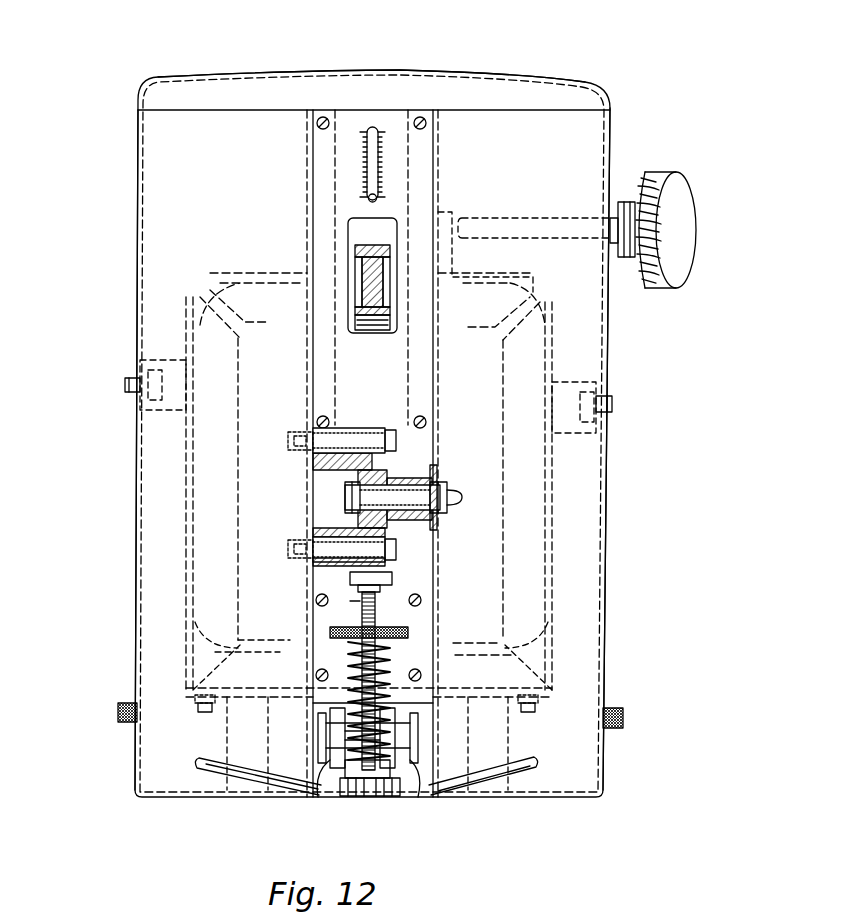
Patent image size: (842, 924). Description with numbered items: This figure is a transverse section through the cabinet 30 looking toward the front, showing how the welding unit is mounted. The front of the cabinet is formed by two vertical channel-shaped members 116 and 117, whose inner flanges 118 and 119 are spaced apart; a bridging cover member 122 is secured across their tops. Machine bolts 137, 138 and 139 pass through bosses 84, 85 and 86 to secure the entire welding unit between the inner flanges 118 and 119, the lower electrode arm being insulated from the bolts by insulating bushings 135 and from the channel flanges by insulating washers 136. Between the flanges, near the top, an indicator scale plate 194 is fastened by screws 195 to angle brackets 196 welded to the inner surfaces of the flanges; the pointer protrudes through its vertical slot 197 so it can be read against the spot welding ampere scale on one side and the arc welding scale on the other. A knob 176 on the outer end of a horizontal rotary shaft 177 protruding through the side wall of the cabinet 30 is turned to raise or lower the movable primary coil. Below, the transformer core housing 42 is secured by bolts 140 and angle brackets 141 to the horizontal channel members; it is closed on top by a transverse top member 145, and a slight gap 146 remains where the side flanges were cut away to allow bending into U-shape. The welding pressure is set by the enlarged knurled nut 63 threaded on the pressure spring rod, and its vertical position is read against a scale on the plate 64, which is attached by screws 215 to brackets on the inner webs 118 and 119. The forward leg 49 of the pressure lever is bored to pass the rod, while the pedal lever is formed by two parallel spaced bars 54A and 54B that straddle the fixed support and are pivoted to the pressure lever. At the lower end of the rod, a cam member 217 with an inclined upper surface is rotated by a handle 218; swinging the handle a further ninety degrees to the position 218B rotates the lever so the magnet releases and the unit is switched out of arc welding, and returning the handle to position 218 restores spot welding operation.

The cabinet 30 is at (137, 165).
The bridging cover member 122 is at (437, 86).
The channel-shaped member 117 is at (143, 528).
The channel-shaped member 116 is at (592, 545).
The inner flange 119 is at (312, 373).
The inner flange 118 is at (436, 406).
The screws 195 is at (326, 417).
The screws 215 is at (419, 597).
The indicator scale plate 194 is at (400, 114).
The vertical slot 197 is at (372, 125).
The angle brackets 196 is at (408, 352).
The horizontal rotary shaft 177 is at (572, 220).
The knob 176 is at (684, 200).
The top member 145 is at (278, 272).
The angle brackets 141 is at (463, 652).
The gap 146 is at (230, 643).
The transformer core housing 42 is at (548, 660).
The bolts 140 is at (202, 712).
The boss 86 is at (333, 462).
The boss 84 is at (340, 530).
The machine bolt 139 is at (291, 444).
The machine bolt 137 is at (300, 567).
The insulating washers 136 is at (312, 529).
The insulating bushings 135 is at (412, 482).
The boss 85 is at (410, 520).
The machine bolt 138 is at (458, 498).
The plate 64 is at (348, 590).
The cam member 217 is at (382, 790).
The knurled nut 63 is at (330, 633).
The parallel spaced bar 54A is at (416, 772).
The parallel spaced bar 54B is at (322, 774).
The leg 49 is at (365, 786).
The handle 218 is at (198, 770).
The handle position 218B is at (530, 776).